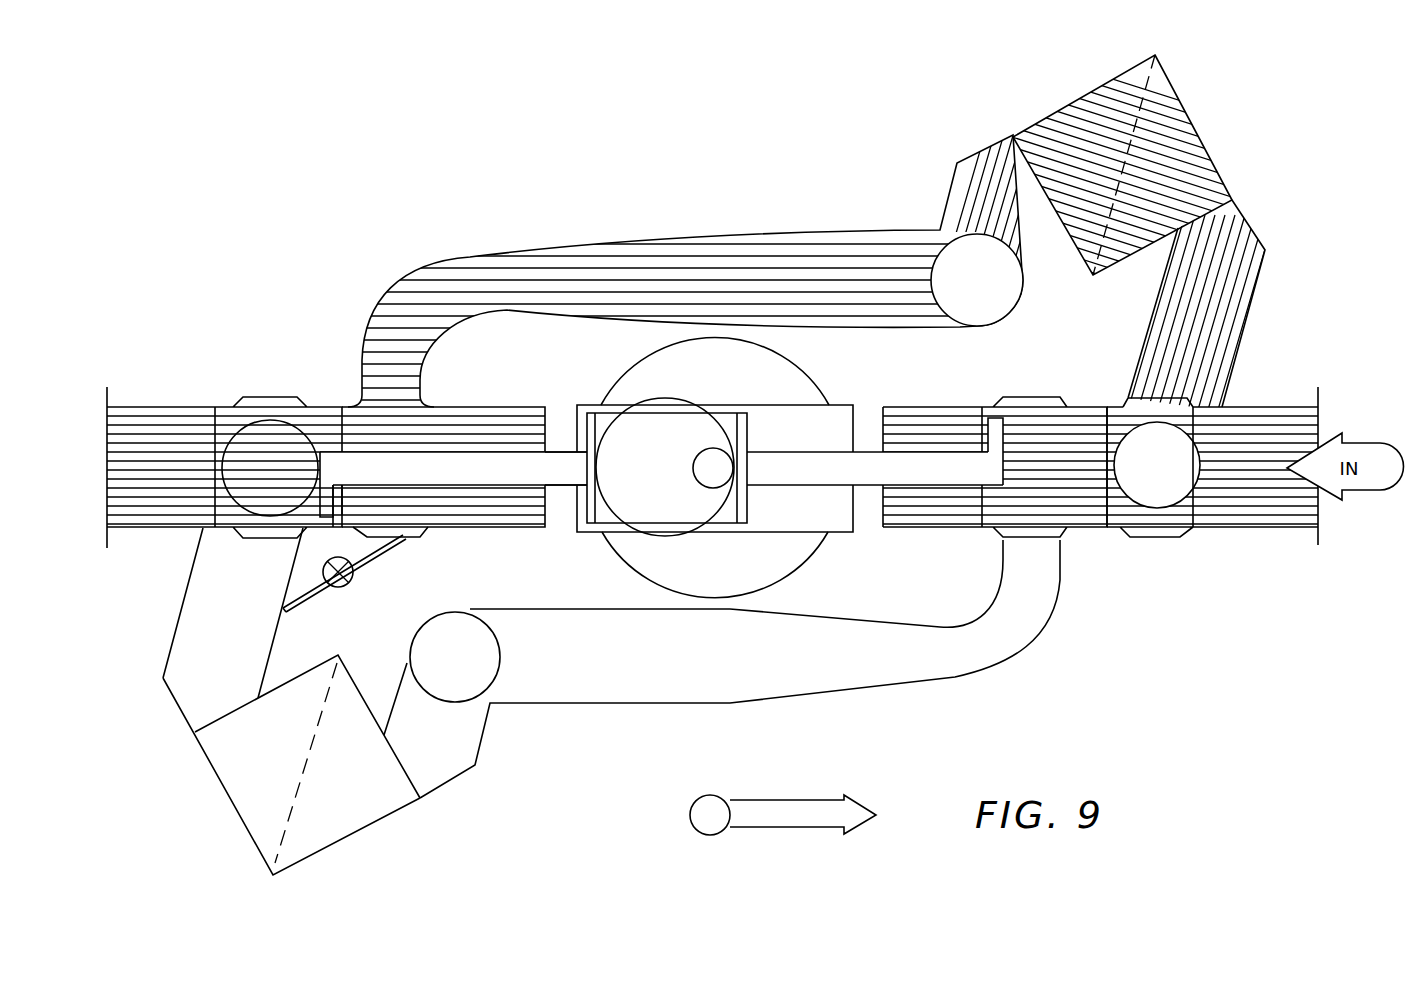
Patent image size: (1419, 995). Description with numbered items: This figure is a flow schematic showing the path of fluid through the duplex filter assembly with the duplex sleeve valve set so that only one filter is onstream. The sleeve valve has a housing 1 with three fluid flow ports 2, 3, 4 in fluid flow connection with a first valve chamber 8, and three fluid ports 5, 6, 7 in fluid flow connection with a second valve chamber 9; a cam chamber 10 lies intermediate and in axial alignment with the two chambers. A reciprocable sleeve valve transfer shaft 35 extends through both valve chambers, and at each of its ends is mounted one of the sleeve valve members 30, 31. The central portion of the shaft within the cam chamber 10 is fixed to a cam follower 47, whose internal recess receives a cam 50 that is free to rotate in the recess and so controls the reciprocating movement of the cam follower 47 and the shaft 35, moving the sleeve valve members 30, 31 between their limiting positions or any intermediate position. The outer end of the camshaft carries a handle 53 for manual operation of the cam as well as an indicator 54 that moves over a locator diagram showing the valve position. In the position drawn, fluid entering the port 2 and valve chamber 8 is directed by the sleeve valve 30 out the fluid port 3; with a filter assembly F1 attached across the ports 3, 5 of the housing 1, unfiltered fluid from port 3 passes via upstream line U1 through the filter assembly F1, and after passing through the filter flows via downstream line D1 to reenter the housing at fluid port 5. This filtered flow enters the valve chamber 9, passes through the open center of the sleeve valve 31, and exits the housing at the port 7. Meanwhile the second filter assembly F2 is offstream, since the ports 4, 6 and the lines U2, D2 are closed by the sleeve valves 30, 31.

The housing 1 is at (530, 530).
The fluid flow port 2 is at (1320, 417).
The fluid flow port 3 is at (1165, 510).
The fluid flow port 4 is at (993, 520).
The fluid port 5 is at (425, 405).
The fluid port 6 is at (237, 432).
The fluid port 7 is at (105, 438).
The first valve chamber 8 is at (1288, 508).
The second valve chamber 9 is at (453, 518).
The cam chamber 10 is at (650, 565).
The sleeve valve member 30 is at (1060, 405).
The sleeve valve member 31 is at (307, 410).
The sleeve valve transfer shaft 35 is at (838, 442).
The cam follower 47 is at (743, 508).
The cam 50 is at (670, 402).
The handle 53 is at (723, 458).
The indicator 54 is at (785, 827).
The downstream line D1 is at (778, 232).
The downstream line D2 is at (183, 595).
The upstream line U1 is at (1246, 316).
The upstream line U2 is at (844, 695).
The filter assembly F1 is at (1200, 130).
The filter assembly F2 is at (337, 843).